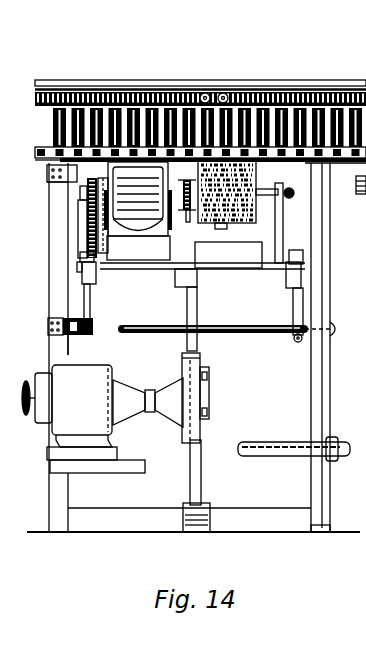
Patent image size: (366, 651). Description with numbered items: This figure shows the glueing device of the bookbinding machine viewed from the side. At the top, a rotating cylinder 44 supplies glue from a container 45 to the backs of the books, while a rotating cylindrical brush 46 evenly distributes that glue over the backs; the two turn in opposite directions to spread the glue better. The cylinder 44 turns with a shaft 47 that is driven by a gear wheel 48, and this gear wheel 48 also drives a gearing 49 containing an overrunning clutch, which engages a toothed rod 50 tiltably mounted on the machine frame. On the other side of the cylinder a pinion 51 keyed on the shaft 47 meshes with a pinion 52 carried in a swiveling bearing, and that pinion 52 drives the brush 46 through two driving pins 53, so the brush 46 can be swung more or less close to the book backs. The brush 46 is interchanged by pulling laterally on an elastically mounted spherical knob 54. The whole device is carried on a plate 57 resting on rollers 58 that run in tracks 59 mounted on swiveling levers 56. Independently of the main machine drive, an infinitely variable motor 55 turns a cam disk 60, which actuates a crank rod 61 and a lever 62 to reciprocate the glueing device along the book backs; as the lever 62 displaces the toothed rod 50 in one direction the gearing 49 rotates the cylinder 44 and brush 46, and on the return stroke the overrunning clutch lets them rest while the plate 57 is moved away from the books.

The rotating cylinder 44 is at (96, 186).
The container 45 is at (145, 236).
The rotating cylindrical brush 46 is at (232, 223).
The shaft 47 is at (118, 176).
The gear wheel 48 is at (88, 180).
The gearing 49 is at (84, 230).
The toothed rod 50 is at (82, 262).
The pinion 51 is at (183, 186).
The pinion 52 is at (188, 226).
The driving pins 53 is at (222, 223).
The spherical knob 54 is at (291, 190).
The infinitely variable motor 55 is at (74, 417).
The swiveling levers 56 is at (92, 325).
The plate 57 is at (216, 270).
The rollers 58 is at (96, 268).
The tracks 59 is at (80, 267).
The cam disk 60 is at (200, 368).
The crank rod 61 is at (209, 392).
The lever 62 is at (201, 488).